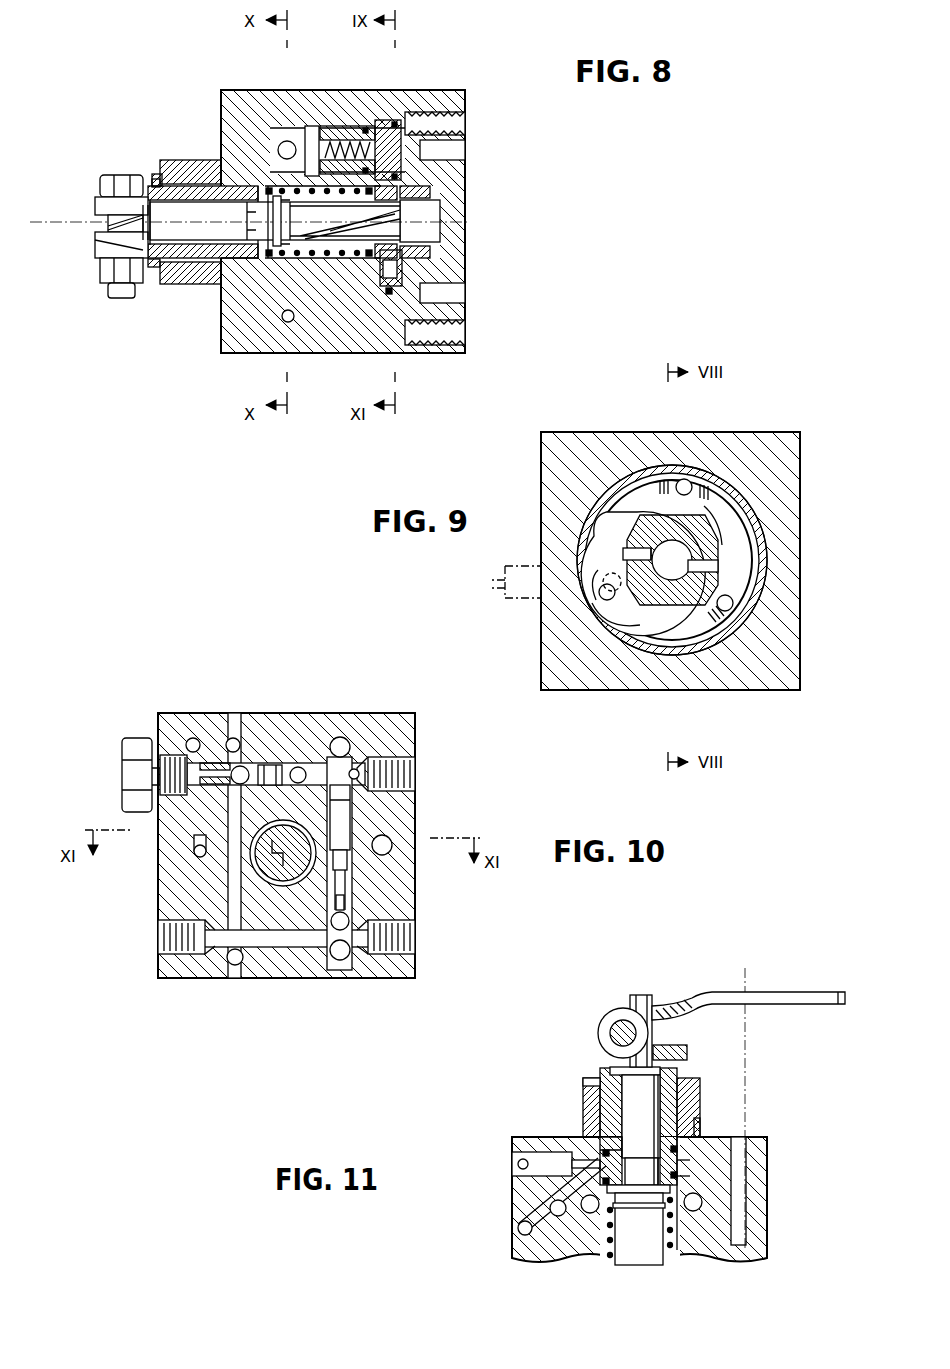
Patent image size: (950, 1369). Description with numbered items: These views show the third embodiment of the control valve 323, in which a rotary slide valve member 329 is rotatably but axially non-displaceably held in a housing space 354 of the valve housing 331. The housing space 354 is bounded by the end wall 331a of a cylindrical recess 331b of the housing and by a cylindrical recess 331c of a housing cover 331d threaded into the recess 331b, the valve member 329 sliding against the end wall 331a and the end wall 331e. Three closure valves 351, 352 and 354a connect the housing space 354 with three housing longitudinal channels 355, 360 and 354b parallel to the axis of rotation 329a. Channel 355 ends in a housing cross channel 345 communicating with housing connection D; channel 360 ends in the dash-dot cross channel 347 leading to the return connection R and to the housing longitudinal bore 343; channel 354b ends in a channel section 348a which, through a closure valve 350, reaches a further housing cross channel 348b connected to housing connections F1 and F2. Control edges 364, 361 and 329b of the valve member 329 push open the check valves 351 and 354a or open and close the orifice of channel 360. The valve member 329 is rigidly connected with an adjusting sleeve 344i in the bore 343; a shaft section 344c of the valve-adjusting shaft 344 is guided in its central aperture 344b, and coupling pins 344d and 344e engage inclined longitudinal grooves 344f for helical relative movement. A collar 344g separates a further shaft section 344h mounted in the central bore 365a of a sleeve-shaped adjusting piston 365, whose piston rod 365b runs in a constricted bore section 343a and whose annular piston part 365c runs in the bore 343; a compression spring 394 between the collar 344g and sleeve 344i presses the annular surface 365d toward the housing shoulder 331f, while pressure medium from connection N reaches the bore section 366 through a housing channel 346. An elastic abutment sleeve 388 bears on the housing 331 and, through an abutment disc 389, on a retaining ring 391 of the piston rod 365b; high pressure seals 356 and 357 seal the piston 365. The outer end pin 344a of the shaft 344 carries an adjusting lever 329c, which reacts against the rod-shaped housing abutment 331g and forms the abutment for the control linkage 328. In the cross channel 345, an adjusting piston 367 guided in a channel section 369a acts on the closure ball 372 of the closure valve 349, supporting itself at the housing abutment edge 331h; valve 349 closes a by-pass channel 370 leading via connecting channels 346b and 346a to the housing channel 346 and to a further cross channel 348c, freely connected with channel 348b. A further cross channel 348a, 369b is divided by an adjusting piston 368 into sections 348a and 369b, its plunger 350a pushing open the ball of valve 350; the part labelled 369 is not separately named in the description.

In FIG. 8, the control valve 323 is at (378, 92).
In FIG. 9, the control valve 323 is at (568, 430).
In FIG. 10, the control valve 323 is at (148, 712).
In FIG. 11, the control valve 323 is at (506, 1140).
In FIG. 11, the control linkage 328 is at (832, 1005).
In FIG. 8, the rotary slide valve member 329 is at (365, 262).
In FIG. 9, the rotary slide valve member 329 is at (738, 560).
In FIG. 8, the axis of rotation 329a is at (95, 221).
In FIG. 9, the control edge 329b is at (752, 612).
In FIG. 11, the adjusting lever 329c is at (790, 992).
In FIG. 8, the valve housing 331 is at (283, 95).
In FIG. 9, the valve housing 331 is at (556, 482).
In FIG. 10, the valve housing 331 is at (202, 980).
In FIG. 11, the valve housing 331 is at (770, 1146).
In FIG. 8, the end wall 331a is at (375, 296).
In FIG. 8, the cylindrical recess 331b is at (403, 112).
In FIG. 8, the cylindrical recess 331c is at (385, 320).
In FIG. 8, the housing cover 331d is at (455, 205).
In FIG. 9, the housing cover 331d is at (762, 585).
In FIG. 8, the end wall 331e is at (440, 127).
In FIG. 11, the housing shoulder 331f is at (682, 1160).
In FIG. 11, the rod-shaped housing abutment 331g is at (743, 968).
In FIG. 10, the fixed housing abutment edge 331h is at (330, 792).
In FIG. 8, the housing longitudinal bore 343 is at (252, 262).
In FIG. 8, the constricted bore section 343a is at (228, 186).
In FIG. 8, the valve-adjusting shaft 344 is at (282, 262).
In FIG. 11, the valve-adjusting shaft 344 is at (676, 1238).
In FIG. 8, the outer end pin 344a is at (92, 235).
In FIG. 11, the outer end pin 344a is at (656, 984).
In FIG. 8, the central aperture 344b is at (400, 250).
In FIG. 8, the shaft section 344c is at (420, 226).
In FIG. 9, the coupling pin 344d is at (645, 580).
In FIG. 9, the coupling pin 344e is at (712, 560).
In FIG. 11, the coupling pin 344e is at (688, 1064).
In FIG. 8, the longitudinal groove 344f is at (440, 160).
In FIG. 8, the collar 344g is at (274, 195).
In FIG. 8, the further shaft section 344h is at (168, 165).
In FIG. 8, the adjusting sleeve 344i is at (440, 186).
In FIG. 9, the adjusting sleeve 344i is at (648, 530).
In FIG. 8, the housing cross channel 345 is at (280, 130).
In FIG. 10, the housing cross channel 345 is at (362, 768).
In FIG. 11, the housing channel 346 is at (598, 1150).
In FIG. 10, the connecting channel 346a is at (165, 825).
In FIG. 11, the connecting channel 346a is at (560, 1218).
In FIG. 10, the connecting channel 346b is at (168, 800).
In FIG. 11, the connecting channel 346b is at (520, 1228).
In FIG. 9, the housing cross channel 347 is at (606, 578).
In FIG. 10, the channel section 348a is at (415, 924).
In FIG. 10, the further housing cross channel 348b is at (274, 950).
In FIG. 10, the further housing cross channel 348c is at (170, 910).
In FIG. 10, the closure valve 349 is at (229, 788).
In FIG. 10, the closure valve 350 is at (325, 912).
In FIG. 10, the plunger 350a is at (332, 948).
In FIG. 8, the closure valve 351 is at (332, 124).
In FIG. 9, the closure valve 351 is at (688, 476).
In FIG. 9, the closure valve 352 is at (598, 630).
In FIG. 8, the housing space 354 is at (395, 284).
In FIG. 9, the check valve 354a is at (731, 623).
In FIG. 10, the housing longitudinal channel 354b is at (350, 885).
In FIG. 8, the housing longitudinal channel 355 is at (290, 142).
In FIG. 10, the housing longitudinal channel 355 is at (302, 766).
In FIG. 11, the high pressure seal 356 is at (606, 1140).
In FIG. 11, the high pressure seal 357 is at (612, 1210).
In FIG. 9, the housing longitudinal channel 360 is at (598, 620).
In FIG. 9, the control edge 361 is at (598, 580).
In FIG. 9, the control edge 364 is at (722, 505).
In FIG. 8, the adjusting piston 365 is at (160, 266).
In FIG. 8, the central bore 365a is at (110, 246).
In FIG. 8, the piston rod 365b is at (155, 178).
In FIG. 11, the piston rod 365b is at (703, 1092).
In FIG. 8, the annular piston part 365c is at (252, 262).
In FIG. 11, the annular surface 365d is at (682, 1176).
In FIG. 11, the bore section 366 is at (615, 1160).
In FIG. 10, the adjusting piston 367 is at (272, 763).
In FIG. 10, the adjusting piston 368 is at (350, 858).
In FIG. 11, the gland 369 is at (702, 1122).
In FIG. 10, the channel section 369a is at (242, 764).
In FIG. 10, the channel section 369b is at (352, 810).
In FIG. 10, the by-pass channel 370 is at (190, 762).
In FIG. 10, the closure ball 372 is at (214, 762).
In FIG. 8, the outer elastic abutment sleeve 388 is at (208, 284).
In FIG. 11, the outer elastic abutment sleeve 388 is at (588, 1100).
In FIG. 8, the abutment disc 389 is at (148, 295).
In FIG. 11, the abutment disc 389 is at (600, 1080).
In FIG. 11, the retaining ring 391 is at (610, 1066).
In FIG. 8, the compression spring 394 is at (300, 258).
In FIG. 11, the compression spring 394 is at (672, 1250).
In FIG. 10, the housing connection D is at (424, 774).
In FIG. 10, the housing connection F1 is at (150, 942).
In FIG. 10, the housing connection F2 is at (422, 942).
In FIG. 11, the housing connection N is at (505, 1164).
In FIG. 9, the housing connection R is at (535, 592).